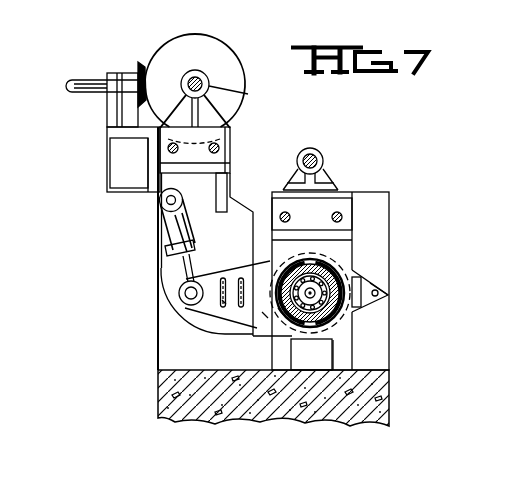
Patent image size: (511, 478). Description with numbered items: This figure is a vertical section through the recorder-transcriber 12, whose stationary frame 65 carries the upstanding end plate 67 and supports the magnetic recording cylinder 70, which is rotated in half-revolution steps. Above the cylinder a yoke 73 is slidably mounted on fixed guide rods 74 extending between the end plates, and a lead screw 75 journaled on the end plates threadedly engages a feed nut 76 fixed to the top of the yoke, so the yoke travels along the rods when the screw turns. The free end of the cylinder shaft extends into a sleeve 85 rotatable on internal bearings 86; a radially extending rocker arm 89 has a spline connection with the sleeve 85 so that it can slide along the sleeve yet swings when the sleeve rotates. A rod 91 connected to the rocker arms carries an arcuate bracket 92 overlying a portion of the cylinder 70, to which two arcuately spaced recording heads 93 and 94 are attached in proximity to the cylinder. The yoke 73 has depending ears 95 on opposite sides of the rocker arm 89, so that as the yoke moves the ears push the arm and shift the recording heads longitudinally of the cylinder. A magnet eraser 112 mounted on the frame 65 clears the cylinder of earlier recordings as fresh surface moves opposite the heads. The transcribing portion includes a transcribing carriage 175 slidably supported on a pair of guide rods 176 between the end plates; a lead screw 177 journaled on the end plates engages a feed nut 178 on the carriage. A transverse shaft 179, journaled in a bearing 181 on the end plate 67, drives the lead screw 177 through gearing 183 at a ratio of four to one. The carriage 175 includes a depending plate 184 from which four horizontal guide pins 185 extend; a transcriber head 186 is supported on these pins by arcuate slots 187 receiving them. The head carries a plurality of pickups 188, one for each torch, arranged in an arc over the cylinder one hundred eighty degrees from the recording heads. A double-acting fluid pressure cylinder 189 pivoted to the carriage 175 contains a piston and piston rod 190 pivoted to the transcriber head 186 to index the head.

The recorder-transcriber 12 is at (393, 141).
The stationary frame 65 is at (161, 401).
The end plate 67 is at (380, 211).
The magnetic recording cylinder 70 is at (336, 326).
The yoke 73 is at (287, 203).
The guide rods 74 is at (289, 216).
The lead screw 75 is at (312, 160).
The feed nut 76 is at (322, 163).
The sleeve 85 is at (290, 263).
The internal bearings 86 is at (322, 284).
The rocker arm 89 is at (379, 293).
The rod 91 is at (388, 296).
The arcuate bracket 92 is at (360, 311).
The recording head 93 is at (358, 280).
The recording head 94 is at (350, 318).
The depending ears 95 is at (290, 322).
The magnet eraser 112 is at (312, 354).
The transcribing carriage 175 is at (222, 160).
The guide rods 176 is at (209, 150).
The lead screw 177 is at (204, 80).
The feed nut 178 is at (250, 95).
The transverse shaft 179 is at (80, 81).
The bearing 181 is at (125, 73).
The gearing 183 is at (202, 34).
The depending plate 184 is at (165, 289).
The guide pins 185 is at (240, 278).
The transcriber head 186 is at (212, 305).
The arcuate slots 187 is at (222, 305).
The pickups 188 is at (272, 318).
The double-acting fluid pressure cylinder 189 is at (175, 228).
The piston rod 190 is at (183, 264).